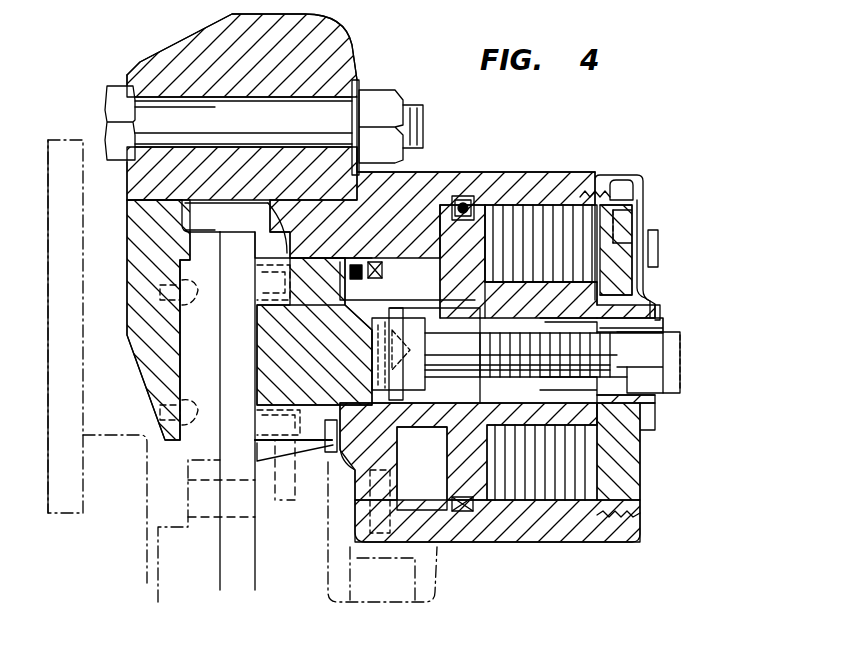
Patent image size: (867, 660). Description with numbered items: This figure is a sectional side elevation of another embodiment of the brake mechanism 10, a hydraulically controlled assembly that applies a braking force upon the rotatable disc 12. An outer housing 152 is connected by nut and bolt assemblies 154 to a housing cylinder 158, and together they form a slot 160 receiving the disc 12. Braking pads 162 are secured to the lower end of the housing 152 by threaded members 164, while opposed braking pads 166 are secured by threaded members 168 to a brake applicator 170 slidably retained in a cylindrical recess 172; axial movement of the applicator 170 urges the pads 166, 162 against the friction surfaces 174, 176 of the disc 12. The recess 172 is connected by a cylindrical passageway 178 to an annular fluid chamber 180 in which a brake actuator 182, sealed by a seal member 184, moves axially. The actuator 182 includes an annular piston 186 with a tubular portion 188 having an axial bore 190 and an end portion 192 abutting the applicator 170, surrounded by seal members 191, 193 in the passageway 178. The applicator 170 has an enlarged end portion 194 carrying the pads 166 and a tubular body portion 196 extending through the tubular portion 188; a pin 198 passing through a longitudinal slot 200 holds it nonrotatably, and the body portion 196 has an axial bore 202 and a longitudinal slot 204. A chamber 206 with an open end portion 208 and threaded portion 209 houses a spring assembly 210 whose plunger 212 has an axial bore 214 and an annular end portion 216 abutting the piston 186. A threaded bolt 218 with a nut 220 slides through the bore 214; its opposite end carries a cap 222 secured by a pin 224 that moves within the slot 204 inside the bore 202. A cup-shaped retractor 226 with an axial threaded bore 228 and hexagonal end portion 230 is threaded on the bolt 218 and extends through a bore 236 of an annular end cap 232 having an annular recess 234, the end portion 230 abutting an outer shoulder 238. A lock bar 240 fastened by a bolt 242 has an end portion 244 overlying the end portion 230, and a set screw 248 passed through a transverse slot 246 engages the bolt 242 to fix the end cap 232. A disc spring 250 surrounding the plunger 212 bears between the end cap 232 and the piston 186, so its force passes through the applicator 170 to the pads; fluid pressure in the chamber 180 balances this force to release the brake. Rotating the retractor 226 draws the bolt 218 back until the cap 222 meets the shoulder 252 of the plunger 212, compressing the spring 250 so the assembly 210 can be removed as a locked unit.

The brake mechanism 10 is at (86, 61).
The rotatable disc 12 is at (228, 567).
The outer housing 152 is at (190, 45).
The nut and bolt assembly 154 is at (112, 100).
The housing cylinder 158 is at (466, 196).
The slot 160 is at (225, 212).
The braking pads 162 is at (205, 370).
The threaded members 164 is at (165, 285).
The braking pads 166 is at (300, 384).
The threaded members 168 is at (335, 250).
The brake applicator 170 is at (334, 354).
The cylindrical recess 172 is at (255, 230).
The friction surface 174 is at (238, 375).
The friction surface 176 is at (215, 342).
The cylindrical passageway 178 is at (261, 419).
The annular fluid chamber 180 is at (445, 480).
The brake actuator 182 is at (420, 497).
The seal member 184 is at (462, 200).
The annular piston 186 is at (443, 477).
The tubular portion 188 is at (424, 455).
The axial bore 190 is at (422, 468).
The seal member 191 is at (355, 265).
The end portion 192 is at (429, 258).
The seal member 193 is at (374, 262).
The enlarged end portion 194 is at (270, 446).
The tubular body portion 196 is at (274, 297).
The pin 198 is at (265, 438).
The longitudinal slot 200 is at (318, 452).
The axial bore 202 is at (544, 353).
The longitudinal slot 204 is at (455, 400).
The chamber 206 is at (512, 515).
The open end portion 208 is at (650, 195).
The threaded portion 209 is at (640, 514).
The spring assembly 210 is at (670, 200).
The plunger 212 is at (480, 265).
The axial bore 214 is at (502, 335).
The annular end portion 216 is at (630, 452).
The threaded bolt 218 is at (645, 345).
The nut 220 is at (663, 325).
The cap 222 is at (274, 356).
The pin 224 is at (385, 292).
The retractor 226 is at (568, 322).
The axial threaded bore 228 is at (630, 378).
The hexagonal end portion 230 is at (656, 412).
The annular end cap 232 is at (640, 480).
The annular recess 234 is at (565, 500).
The bore 236 is at (640, 435).
The outer shoulder 238 is at (655, 290).
The lock bar 240 is at (650, 272).
The bolt 242 is at (665, 236).
The end portion 244 is at (665, 303).
The transverse slot 246 is at (576, 190).
The set screw 248 is at (623, 180).
The disc spring 250 is at (523, 215).
The shoulder 252 is at (568, 388).